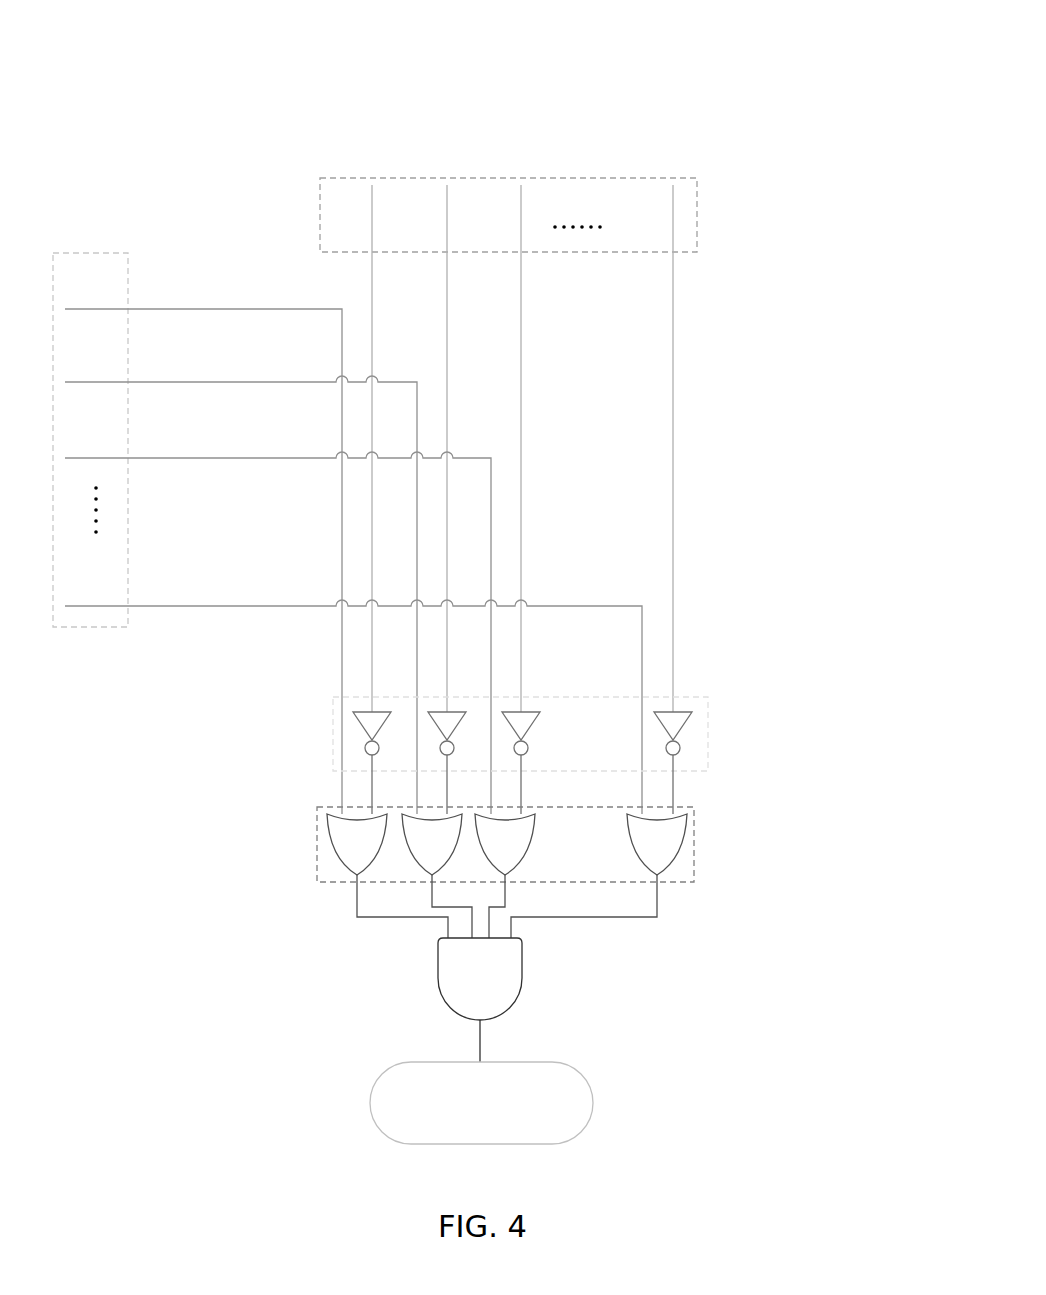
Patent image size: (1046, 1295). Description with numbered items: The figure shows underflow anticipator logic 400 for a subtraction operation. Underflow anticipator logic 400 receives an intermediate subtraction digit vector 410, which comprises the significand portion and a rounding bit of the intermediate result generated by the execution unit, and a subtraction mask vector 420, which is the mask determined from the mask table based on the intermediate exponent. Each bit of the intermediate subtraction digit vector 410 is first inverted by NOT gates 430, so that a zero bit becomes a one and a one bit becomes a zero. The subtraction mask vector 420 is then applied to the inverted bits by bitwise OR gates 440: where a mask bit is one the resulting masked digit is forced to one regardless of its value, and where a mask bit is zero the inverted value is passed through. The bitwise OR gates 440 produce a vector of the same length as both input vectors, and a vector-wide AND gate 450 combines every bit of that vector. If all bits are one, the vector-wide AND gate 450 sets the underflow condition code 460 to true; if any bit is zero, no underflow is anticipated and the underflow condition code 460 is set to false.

The underflow anticipator logic 400 is at (752, 124).
The intermediate subtraction digit vector 410 is at (697, 217).
The subtraction mask vector 420 is at (92, 627).
The NOT gates 430 is at (708, 734).
The bitwise OR gates 440 is at (694, 846).
The vector-wide AND gate 450 is at (522, 979).
The underflow condition code 460 is at (593, 1102).